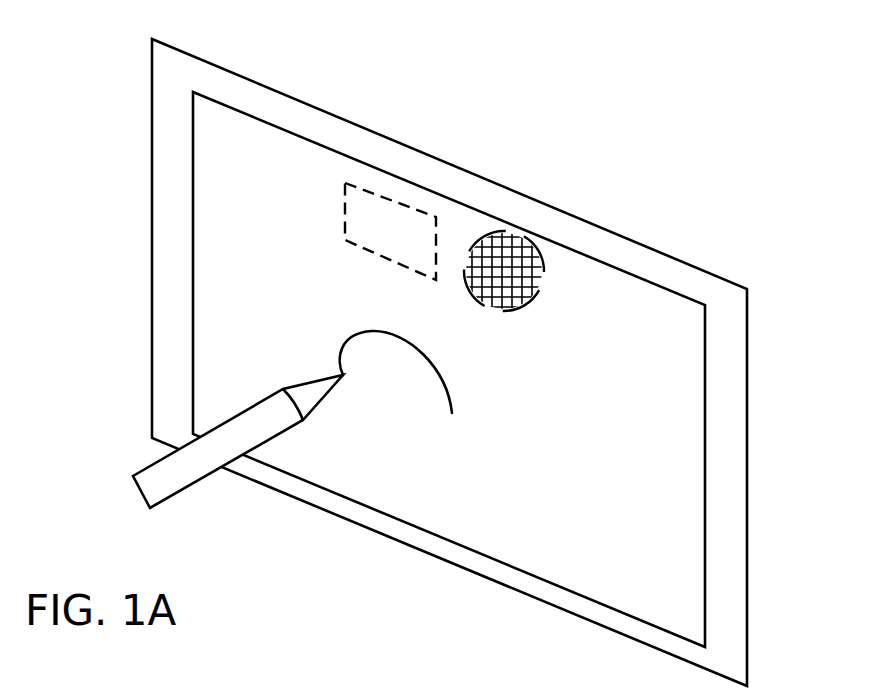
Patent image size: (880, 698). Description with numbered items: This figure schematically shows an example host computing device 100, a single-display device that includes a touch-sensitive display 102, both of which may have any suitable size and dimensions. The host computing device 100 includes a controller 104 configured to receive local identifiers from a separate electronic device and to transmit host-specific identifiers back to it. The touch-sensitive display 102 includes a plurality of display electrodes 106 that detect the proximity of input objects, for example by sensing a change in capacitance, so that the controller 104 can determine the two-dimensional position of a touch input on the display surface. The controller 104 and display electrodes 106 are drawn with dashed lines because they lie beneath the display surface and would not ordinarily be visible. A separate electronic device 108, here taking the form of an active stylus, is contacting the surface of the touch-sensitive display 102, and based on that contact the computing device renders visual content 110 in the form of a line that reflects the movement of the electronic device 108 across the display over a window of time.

The host computing device 100 is at (518, 113).
The touch-sensitive display 102 is at (193, 175).
The controller 104 is at (408, 240).
The display electrodes 106 is at (530, 245).
The electronic device 108 is at (136, 473).
The visual content 110 is at (342, 346).